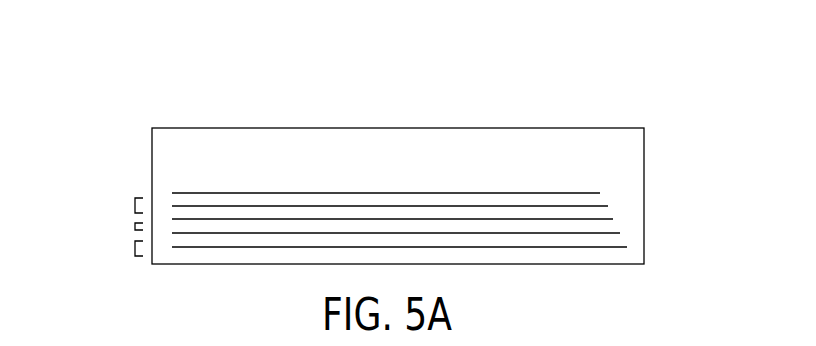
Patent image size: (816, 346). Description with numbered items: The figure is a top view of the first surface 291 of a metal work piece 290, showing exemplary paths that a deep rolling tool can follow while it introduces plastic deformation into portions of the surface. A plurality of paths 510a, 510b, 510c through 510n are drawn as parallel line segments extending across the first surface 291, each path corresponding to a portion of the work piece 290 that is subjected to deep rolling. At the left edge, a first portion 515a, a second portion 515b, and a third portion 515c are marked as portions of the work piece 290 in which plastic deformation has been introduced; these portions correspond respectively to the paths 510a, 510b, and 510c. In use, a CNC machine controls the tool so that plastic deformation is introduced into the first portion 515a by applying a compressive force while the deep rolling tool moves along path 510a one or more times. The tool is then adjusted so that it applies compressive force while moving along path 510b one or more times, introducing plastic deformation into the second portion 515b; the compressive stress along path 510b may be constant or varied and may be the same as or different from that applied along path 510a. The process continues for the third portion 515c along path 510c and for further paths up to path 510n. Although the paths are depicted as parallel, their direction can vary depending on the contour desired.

The work piece 290 is at (187, 95).
The first surface 291 is at (547, 135).
The path 510n is at (600, 198).
The path 510c is at (608, 212).
The path 510b is at (613, 227).
The path 510a is at (620, 241).
The third portion 515c is at (135, 204).
The second portion 515b is at (135, 227).
The first portion 515a is at (135, 249).